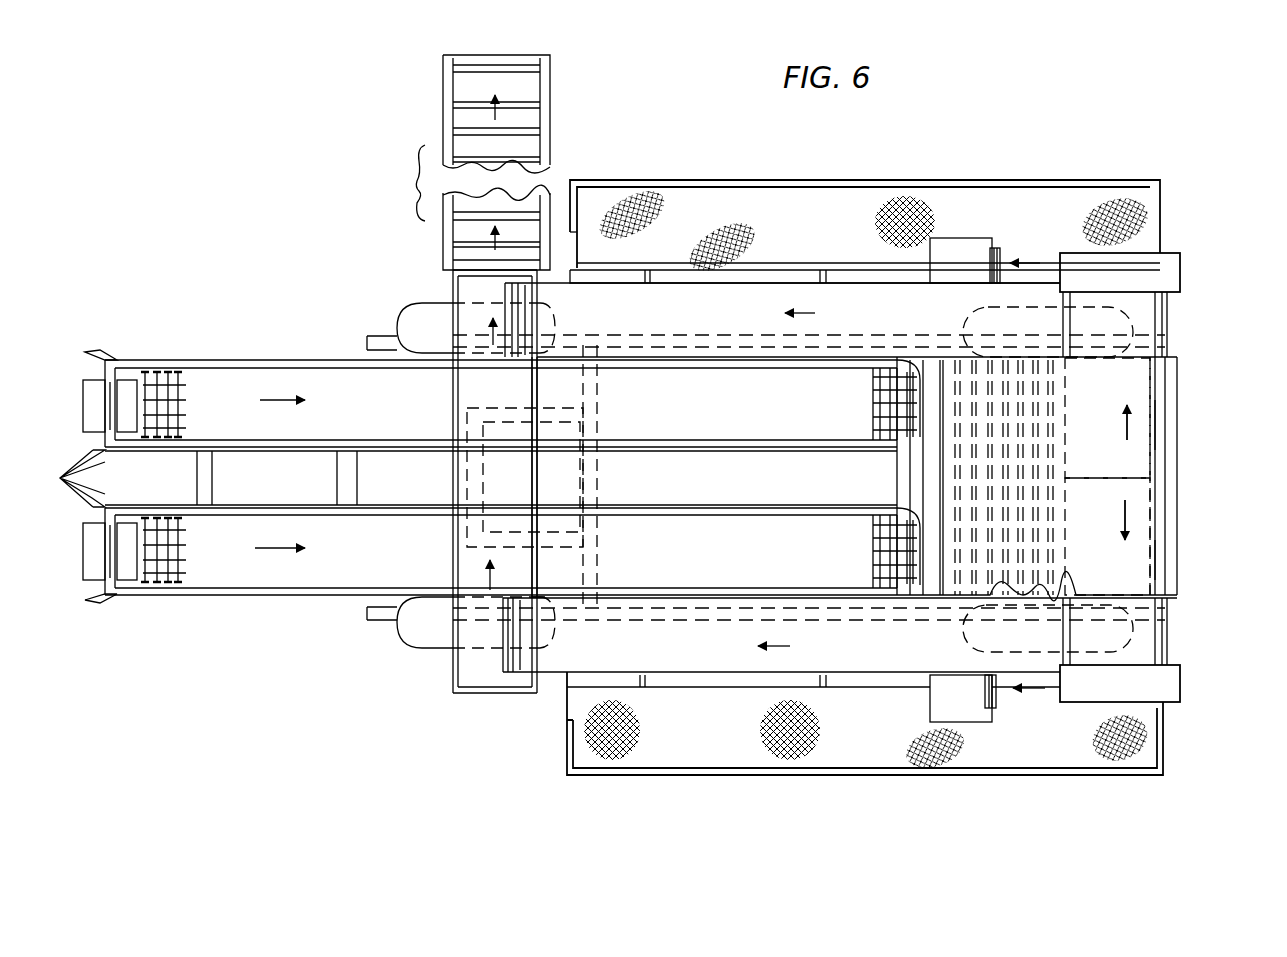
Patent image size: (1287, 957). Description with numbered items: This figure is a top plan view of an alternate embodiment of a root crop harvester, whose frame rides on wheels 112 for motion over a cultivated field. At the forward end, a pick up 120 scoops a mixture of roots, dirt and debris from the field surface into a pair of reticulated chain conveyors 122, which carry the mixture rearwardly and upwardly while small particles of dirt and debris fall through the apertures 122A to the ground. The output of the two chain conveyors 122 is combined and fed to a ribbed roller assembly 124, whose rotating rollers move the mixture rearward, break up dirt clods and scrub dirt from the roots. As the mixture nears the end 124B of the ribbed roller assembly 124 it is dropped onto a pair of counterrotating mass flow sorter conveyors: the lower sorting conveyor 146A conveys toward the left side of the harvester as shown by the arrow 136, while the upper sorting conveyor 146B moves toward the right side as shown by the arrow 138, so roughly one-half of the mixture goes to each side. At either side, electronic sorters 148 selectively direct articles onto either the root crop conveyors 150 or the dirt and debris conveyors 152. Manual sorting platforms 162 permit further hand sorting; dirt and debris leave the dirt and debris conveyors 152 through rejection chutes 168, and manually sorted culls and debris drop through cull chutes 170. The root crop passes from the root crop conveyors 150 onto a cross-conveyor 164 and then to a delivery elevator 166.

The wheels 112 is at (406, 312).
The pick up 120 is at (123, 333).
The reticulated chain conveyors 122 is at (289, 385).
The apertures 122A is at (167, 374).
The ribbed roller assembly 124 is at (1033, 509).
The end of the ribbed roller assembly 124B is at (1068, 385).
The arrow 136 is at (1122, 522).
The arrow 138 is at (1122, 430).
The lower sorting conveyor 146A is at (1140, 562).
The upper sorting conveyor 146B is at (1145, 428).
The electronic sorters 148 is at (1170, 278).
The root crop conveyors 150 is at (708, 314).
The dirt and debris conveyors 152 is at (1022, 263).
The manual sorting platforms 162 is at (864, 486).
The cross-conveyor 164 is at (511, 396).
The delivery elevator 166 is at (525, 214).
The rejection chutes 168 is at (960, 245).
The cull chutes 170 is at (872, 275).